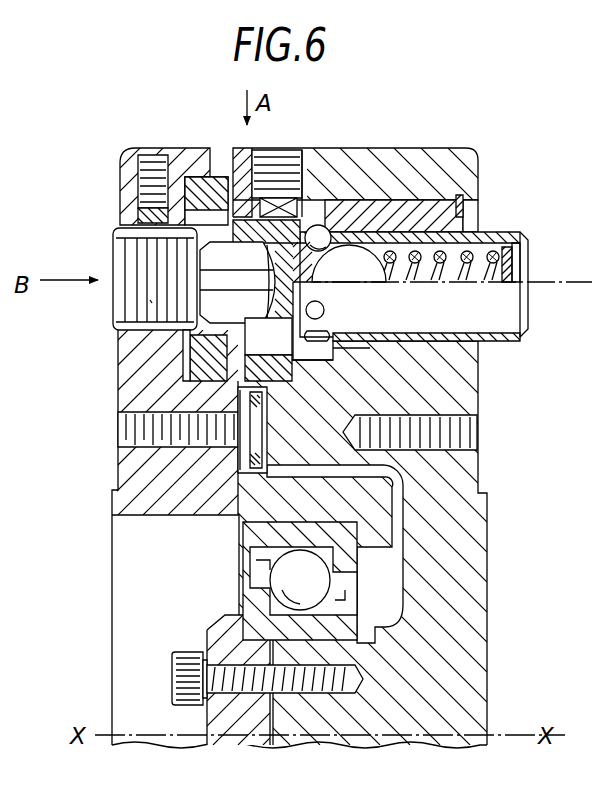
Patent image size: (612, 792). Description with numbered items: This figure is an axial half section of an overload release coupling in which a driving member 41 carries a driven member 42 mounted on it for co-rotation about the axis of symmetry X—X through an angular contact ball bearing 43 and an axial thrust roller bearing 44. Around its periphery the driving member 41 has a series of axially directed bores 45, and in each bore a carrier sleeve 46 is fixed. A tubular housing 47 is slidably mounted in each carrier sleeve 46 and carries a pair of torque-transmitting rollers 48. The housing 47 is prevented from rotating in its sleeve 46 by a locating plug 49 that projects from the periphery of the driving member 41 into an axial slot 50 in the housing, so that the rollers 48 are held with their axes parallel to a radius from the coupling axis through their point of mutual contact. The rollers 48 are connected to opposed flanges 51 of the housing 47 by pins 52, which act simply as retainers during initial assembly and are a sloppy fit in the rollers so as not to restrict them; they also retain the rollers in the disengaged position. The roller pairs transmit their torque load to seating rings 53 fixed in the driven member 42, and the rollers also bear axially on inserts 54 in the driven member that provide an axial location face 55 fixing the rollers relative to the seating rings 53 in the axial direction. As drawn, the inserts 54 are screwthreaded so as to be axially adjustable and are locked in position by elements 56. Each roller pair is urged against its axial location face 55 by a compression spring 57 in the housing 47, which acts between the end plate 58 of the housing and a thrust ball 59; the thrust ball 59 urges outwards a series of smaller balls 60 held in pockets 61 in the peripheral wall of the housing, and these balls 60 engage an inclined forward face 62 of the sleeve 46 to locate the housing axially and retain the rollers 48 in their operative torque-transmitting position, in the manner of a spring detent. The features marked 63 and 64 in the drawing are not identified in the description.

The driving member 41 is at (462, 608).
The driven member 42 is at (153, 466).
The angular contact ball bearing 43 is at (277, 578).
The axial thrust roller bearing 44 is at (250, 445).
The axially directed bores 45 is at (392, 198).
The carrier sleeve 46 is at (456, 205).
The tubular housing 47 is at (494, 316).
The torque-transmitting rollers 48 is at (130, 272).
The locating plug 49 is at (290, 168).
The axial slot 50 is at (318, 205).
The opposed flanges 51 is at (214, 205).
The pins 52 is at (208, 333).
The seating rings 53 is at (205, 362).
The inserts 54 is at (200, 270).
The axial location face 55 is at (150, 300).
The locking elements 56 is at (150, 175).
The compression spring 57 is at (470, 258).
The end plate 58 is at (514, 265).
The thrust ball 59 is at (362, 275).
The smaller balls 60 is at (324, 310).
The pockets 61 is at (323, 252).
The inclined forward face 62 is at (323, 334).
The recess 63 is at (268, 349).
The passage 64 is at (357, 342).